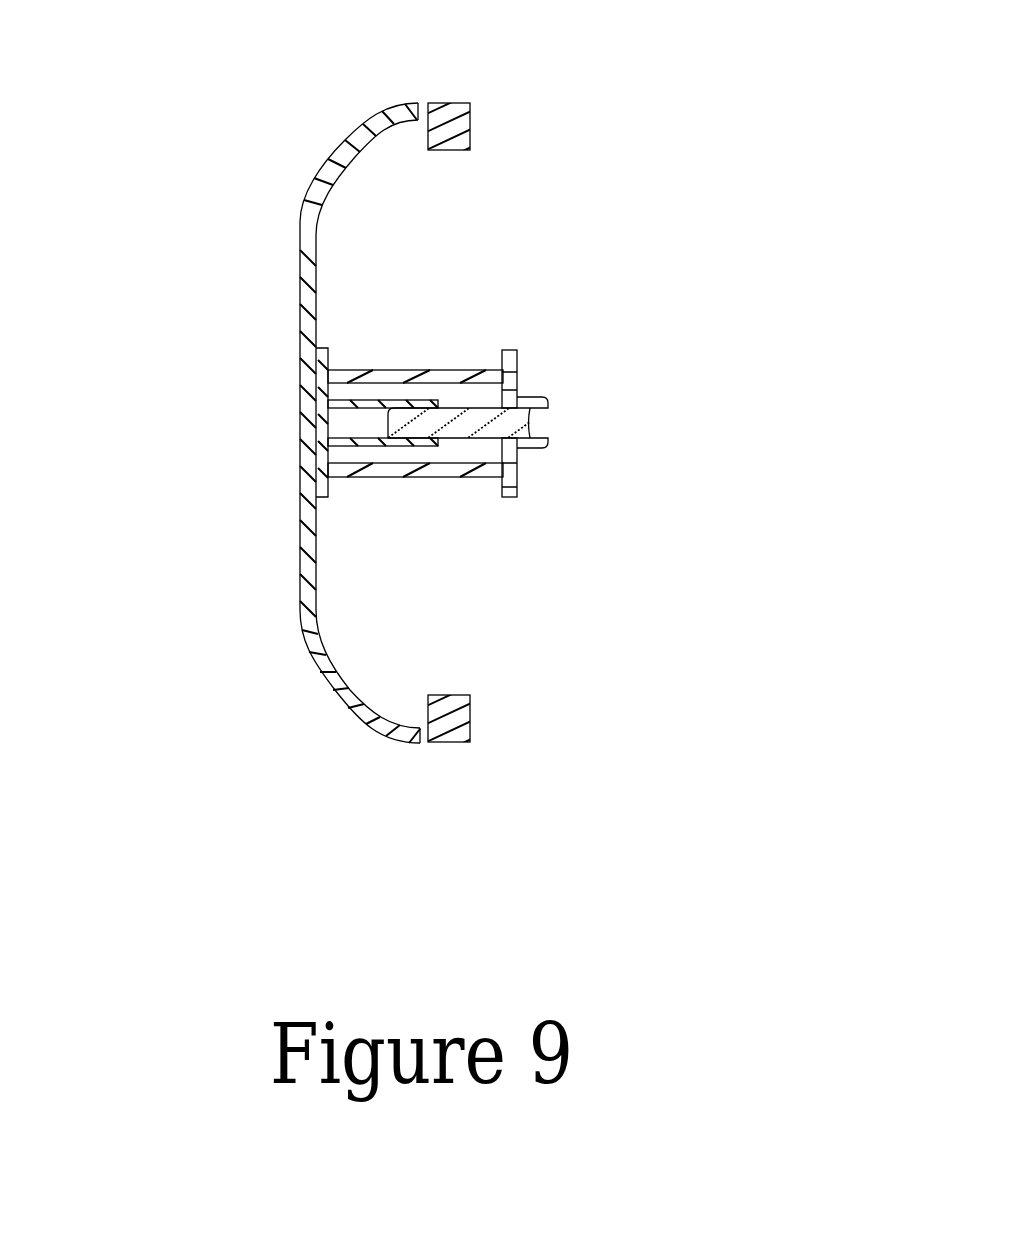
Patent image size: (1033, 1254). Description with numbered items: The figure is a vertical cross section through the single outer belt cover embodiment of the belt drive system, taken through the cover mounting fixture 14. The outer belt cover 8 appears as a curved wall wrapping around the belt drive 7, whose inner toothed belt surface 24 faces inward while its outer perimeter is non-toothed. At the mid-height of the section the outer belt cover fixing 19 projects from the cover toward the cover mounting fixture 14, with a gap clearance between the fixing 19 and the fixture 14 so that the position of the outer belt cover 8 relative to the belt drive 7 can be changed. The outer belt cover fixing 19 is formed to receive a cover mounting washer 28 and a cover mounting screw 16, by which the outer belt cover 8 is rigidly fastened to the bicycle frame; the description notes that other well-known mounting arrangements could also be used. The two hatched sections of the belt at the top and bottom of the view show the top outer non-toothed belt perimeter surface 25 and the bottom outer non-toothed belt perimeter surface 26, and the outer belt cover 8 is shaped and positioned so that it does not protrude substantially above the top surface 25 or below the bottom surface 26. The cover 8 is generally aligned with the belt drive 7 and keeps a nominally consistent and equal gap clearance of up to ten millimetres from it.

The belt drive 7 is at (443, 125).
The outer belt cover 8 is at (300, 343).
The cover mounting fixture 14 is at (395, 478).
The cover mounting screw 16 is at (548, 398).
The outer belt cover fixing 19 is at (425, 442).
The inner toothed belt surface 24 is at (267, 445).
The top outer non-toothed belt perimeter surface 25 is at (462, 103).
The bottom outer non-toothed belt perimeter surface 26 is at (458, 743).
The cover mounting washer 28 is at (517, 493).